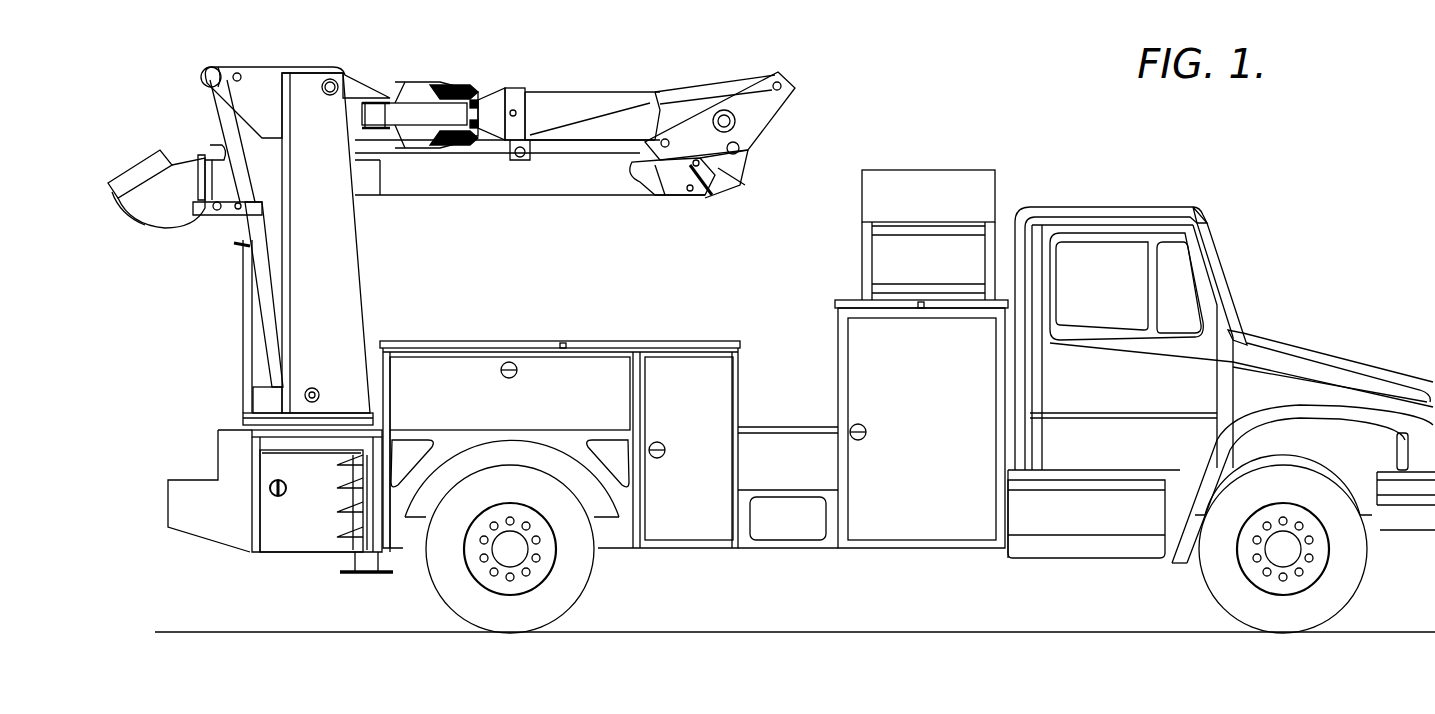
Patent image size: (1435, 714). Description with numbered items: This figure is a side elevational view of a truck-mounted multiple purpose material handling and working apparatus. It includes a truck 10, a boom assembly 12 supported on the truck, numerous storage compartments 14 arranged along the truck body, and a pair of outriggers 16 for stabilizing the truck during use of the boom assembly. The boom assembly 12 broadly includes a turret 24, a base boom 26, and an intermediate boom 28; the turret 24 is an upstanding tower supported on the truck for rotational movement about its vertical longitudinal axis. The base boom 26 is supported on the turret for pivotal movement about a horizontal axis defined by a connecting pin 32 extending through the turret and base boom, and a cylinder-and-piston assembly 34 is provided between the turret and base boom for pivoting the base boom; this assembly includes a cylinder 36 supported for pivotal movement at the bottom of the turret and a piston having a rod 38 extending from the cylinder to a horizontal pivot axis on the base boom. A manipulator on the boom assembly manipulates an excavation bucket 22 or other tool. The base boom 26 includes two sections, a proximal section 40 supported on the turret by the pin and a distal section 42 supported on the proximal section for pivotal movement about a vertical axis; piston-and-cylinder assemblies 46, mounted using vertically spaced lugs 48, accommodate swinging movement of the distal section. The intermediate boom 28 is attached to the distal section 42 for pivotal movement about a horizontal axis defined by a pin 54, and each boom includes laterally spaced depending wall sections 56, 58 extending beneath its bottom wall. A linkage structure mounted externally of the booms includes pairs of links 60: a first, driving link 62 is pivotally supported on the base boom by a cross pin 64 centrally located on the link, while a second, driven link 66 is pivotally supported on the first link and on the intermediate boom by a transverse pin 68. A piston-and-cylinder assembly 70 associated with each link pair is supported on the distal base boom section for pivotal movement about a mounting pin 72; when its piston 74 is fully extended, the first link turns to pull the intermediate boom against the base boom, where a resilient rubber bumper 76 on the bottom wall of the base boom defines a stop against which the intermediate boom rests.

The truck 10 is at (1215, 200).
The boom assembly 12 is at (408, 252).
The storage compartments 14 is at (597, 328).
The outriggers 16 is at (350, 560).
The excavation bucket 22 is at (168, 215).
The turret 24 is at (343, 327).
The base boom 26 is at (550, 78).
The intermediate boom 28 is at (498, 195).
The connecting pin 32 is at (332, 78).
The cylinder-and-piston assembly 34 is at (235, 246).
The cylinder 36 is at (270, 322).
The rod 38 is at (235, 137).
The proximal section 40 is at (262, 70).
The distal section 42 is at (600, 130).
The piston-and-cylinder assemblies 46 is at (410, 108).
The lugs 48 is at (372, 100).
The pin 54 is at (718, 158).
The depending wall section 56 is at (745, 148).
The depending wall section 58 is at (725, 168).
The links 60 is at (795, 75).
The driving link 62 is at (775, 100).
The cross pin 64 is at (738, 120).
The driven link 66 is at (672, 168).
The transverse pin 68 is at (705, 175).
The piston-and-cylinder assembly 70 is at (650, 82).
The mounting pin 72 is at (512, 95).
The pistons 74 is at (703, 92).
The resilient rubber bumper 76 is at (528, 153).